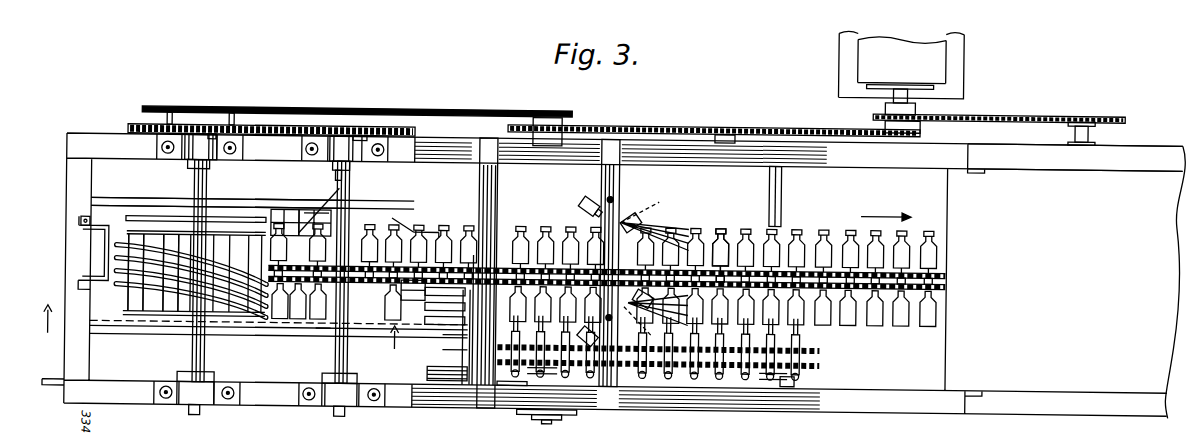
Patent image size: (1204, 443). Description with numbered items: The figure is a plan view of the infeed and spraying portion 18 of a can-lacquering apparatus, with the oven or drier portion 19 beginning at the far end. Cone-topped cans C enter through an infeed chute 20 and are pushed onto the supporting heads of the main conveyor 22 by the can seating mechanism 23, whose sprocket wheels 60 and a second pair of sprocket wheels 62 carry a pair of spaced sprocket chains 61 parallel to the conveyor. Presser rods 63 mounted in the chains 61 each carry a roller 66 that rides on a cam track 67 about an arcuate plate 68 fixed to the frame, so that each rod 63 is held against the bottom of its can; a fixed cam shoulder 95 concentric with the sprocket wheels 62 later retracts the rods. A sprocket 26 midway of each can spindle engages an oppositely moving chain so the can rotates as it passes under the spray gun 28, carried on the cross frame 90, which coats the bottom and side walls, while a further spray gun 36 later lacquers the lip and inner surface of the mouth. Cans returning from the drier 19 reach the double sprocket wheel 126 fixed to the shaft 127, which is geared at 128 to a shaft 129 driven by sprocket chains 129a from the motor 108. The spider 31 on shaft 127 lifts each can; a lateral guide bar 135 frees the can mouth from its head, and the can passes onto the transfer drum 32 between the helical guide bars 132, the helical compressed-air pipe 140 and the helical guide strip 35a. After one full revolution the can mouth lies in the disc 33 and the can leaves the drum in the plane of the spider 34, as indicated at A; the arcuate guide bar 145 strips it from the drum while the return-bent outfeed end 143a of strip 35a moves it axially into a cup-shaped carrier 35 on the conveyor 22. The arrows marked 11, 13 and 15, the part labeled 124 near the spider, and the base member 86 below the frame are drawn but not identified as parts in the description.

The gearing 128 is at (303, 89).
The sprocket chains 129a is at (395, 91).
The infeed and spraying portion 18 is at (655, 141).
The cross frame 90 is at (611, 145).
The motor 108 is at (870, 40).
The oven or drier portion 19 is at (1135, 168).
The disc 33 is at (140, 216).
The guide strip 35a is at (228, 203).
The helical guide bars 132 is at (100, 270).
The pipe 140 is at (150, 288).
The transfer drum 32 is at (168, 310).
The shaft 129 is at (205, 364).
The shaft 127 is at (351, 362).
The direction arrow 11 is at (213, 331).
The can outfeed position A is at (288, 207).
The arcuate guide bar 145 is at (315, 205).
The member 124 is at (348, 171).
The outfeed end 143a is at (345, 200).
The double sprocket wheel 126 is at (303, 291).
The spider 31 is at (325, 310).
The lateral guide bar 135 is at (327, 333).
The cup-shaped carriers 35 is at (447, 225).
The spider 34 is at (393, 214).
The sprocket 26 is at (945, 269).
The sprocket chains 61 is at (687, 360).
The presser rod 63 is at (800, 318).
The sprocket wheels 62 is at (822, 351).
The main conveyor 22 is at (805, 253).
The direction arrow 13 is at (886, 204).
The cone-topped can C is at (728, 232).
The spray gun 36 is at (622, 215).
The spray gun 28 is at (637, 373).
The infeed chute 20 is at (462, 303).
The member 15 is at (413, 306).
The cam track 67 is at (470, 387).
The arcuate plate 68 is at (452, 388).
The sprocket wheels 60 is at (495, 383).
The can seating mechanism 23 is at (530, 362).
The base 86 is at (565, 412).
The cam shoulder 95 is at (767, 365).
The roller 66 is at (790, 378).